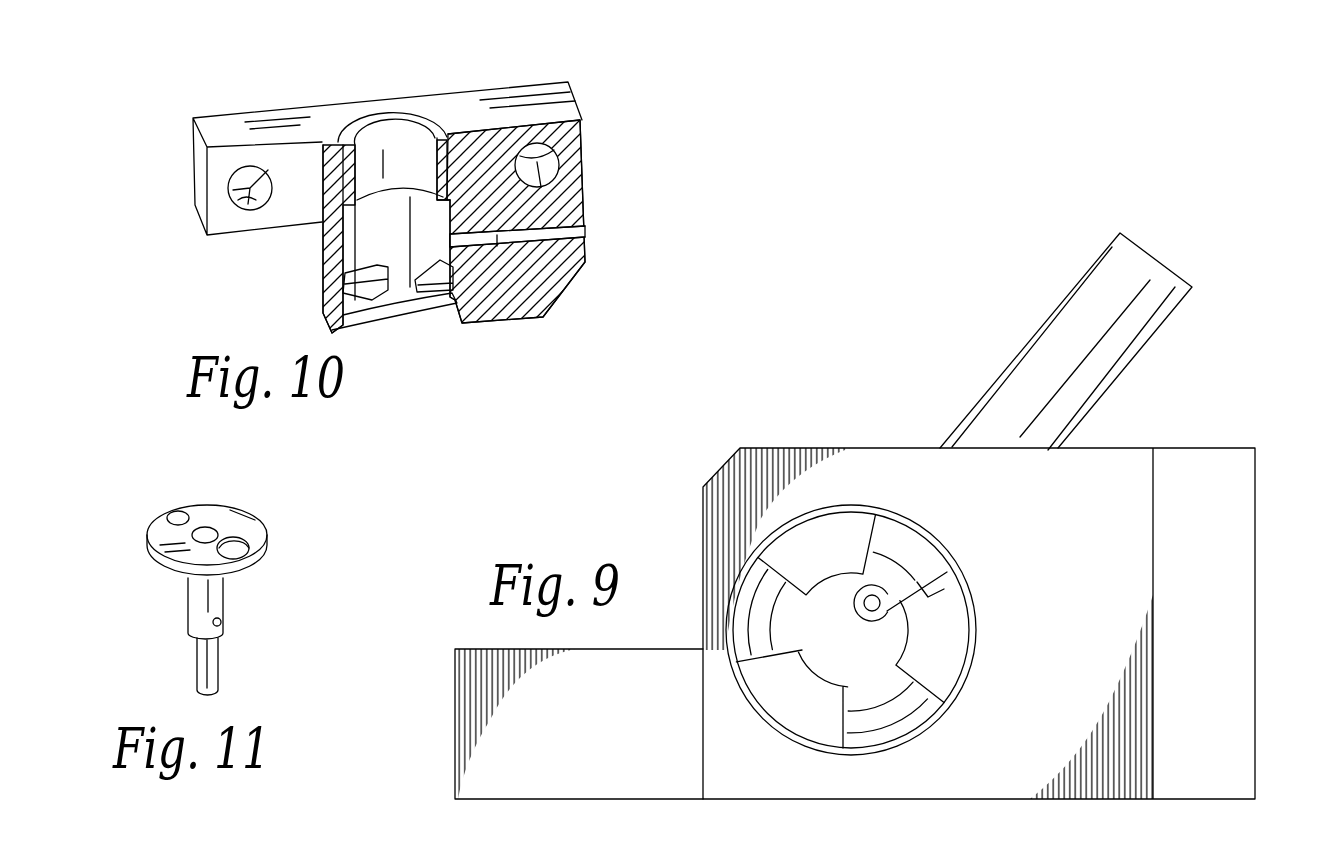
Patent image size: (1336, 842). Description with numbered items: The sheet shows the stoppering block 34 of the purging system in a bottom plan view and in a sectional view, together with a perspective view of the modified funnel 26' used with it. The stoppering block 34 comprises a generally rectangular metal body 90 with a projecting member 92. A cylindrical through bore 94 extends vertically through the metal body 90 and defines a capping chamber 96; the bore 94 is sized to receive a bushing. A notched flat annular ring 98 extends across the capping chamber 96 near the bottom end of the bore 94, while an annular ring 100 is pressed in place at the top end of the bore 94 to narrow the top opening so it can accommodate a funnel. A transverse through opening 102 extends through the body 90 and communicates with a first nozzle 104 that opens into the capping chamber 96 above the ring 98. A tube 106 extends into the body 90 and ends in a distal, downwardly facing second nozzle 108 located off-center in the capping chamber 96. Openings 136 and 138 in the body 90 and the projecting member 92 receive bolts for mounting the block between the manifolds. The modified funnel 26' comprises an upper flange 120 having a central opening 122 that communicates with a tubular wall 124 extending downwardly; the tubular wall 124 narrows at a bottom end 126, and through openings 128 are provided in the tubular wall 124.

In FIG. 10, the stoppering block 34 is at (603, 167).
In FIG. 9, the stoppering block 34 is at (907, 406).
In FIG. 11, the coupling component 26' is at (295, 478).
In FIG. 10, the metal body 90 is at (585, 205).
In FIG. 9, the metal body 90 is at (1117, 467).
In FIG. 10, the projecting member 92 is at (224, 128).
In FIG. 9, the projecting member 92 is at (652, 665).
In FIG. 10, the cylindrical through bore 94 is at (398, 290).
In FIG. 9, the cylindrical through bore 94 is at (909, 735).
In FIG. 10, the capping chamber 96 is at (373, 233).
In FIG. 9, the capping chamber 96 is at (826, 644).
In FIG. 10, the notched flat annular ring 98 is at (376, 272).
In FIG. 9, the notched flat annular ring 98 is at (804, 703).
In FIG. 10, the annular ring 100 is at (396, 163).
In FIG. 10, the transverse through opening 102 is at (585, 229).
In FIG. 10, the first nozzle 104 is at (440, 257).
In FIG. 9, the tube 106 is at (1060, 338).
In FIG. 9, the second nozzle 108 is at (871, 594).
In FIG. 11, the upper flange 120 is at (258, 534).
In FIG. 11, the central opening 122 is at (213, 522).
In FIG. 11, the tubular wall 124 is at (198, 598).
In FIG. 11, the bottom end 126 is at (205, 668).
In FIG. 11, the through openings 128 is at (221, 621).
In FIG. 10, the opening 136 is at (250, 207).
In FIG. 10, the opening 138 is at (548, 173).